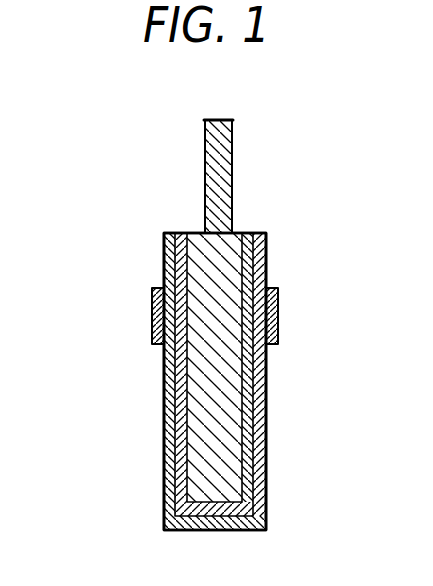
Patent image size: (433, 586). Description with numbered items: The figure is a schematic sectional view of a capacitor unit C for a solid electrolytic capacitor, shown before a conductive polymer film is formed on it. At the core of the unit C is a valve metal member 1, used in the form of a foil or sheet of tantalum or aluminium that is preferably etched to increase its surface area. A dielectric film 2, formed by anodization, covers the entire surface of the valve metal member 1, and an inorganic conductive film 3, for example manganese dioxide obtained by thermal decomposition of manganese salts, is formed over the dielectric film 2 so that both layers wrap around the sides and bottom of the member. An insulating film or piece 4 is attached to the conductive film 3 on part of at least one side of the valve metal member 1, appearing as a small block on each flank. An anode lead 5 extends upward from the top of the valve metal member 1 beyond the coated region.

The valve metal member 1 is at (234, 206).
The dielectric film 2 is at (182, 233).
The inorganic conductive film 3 is at (164, 263).
The insulating film 4 is at (152, 320).
The anode lead 5 is at (222, 119).
The capacitor unit C is at (316, 378).